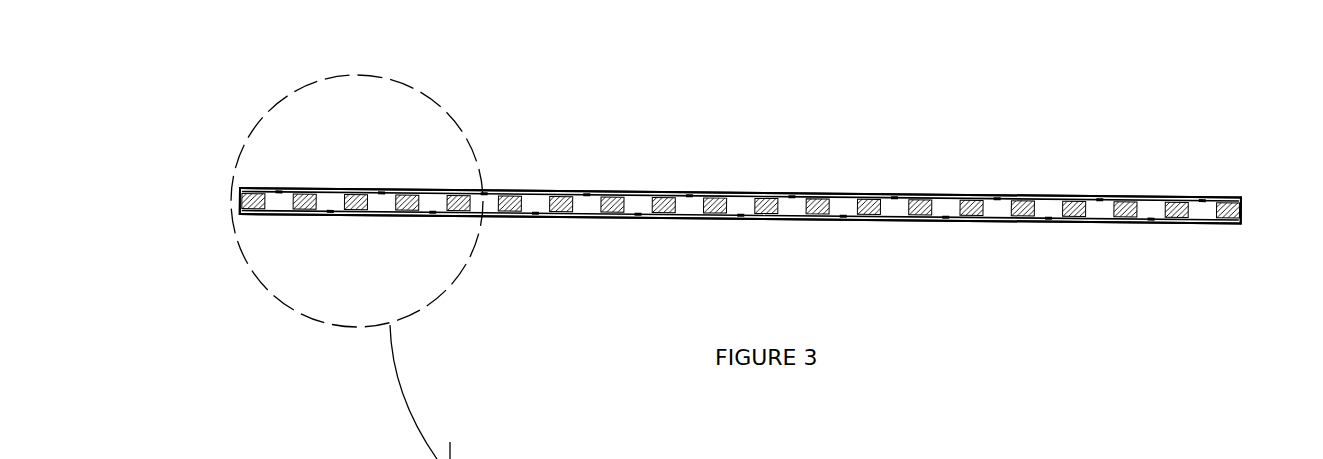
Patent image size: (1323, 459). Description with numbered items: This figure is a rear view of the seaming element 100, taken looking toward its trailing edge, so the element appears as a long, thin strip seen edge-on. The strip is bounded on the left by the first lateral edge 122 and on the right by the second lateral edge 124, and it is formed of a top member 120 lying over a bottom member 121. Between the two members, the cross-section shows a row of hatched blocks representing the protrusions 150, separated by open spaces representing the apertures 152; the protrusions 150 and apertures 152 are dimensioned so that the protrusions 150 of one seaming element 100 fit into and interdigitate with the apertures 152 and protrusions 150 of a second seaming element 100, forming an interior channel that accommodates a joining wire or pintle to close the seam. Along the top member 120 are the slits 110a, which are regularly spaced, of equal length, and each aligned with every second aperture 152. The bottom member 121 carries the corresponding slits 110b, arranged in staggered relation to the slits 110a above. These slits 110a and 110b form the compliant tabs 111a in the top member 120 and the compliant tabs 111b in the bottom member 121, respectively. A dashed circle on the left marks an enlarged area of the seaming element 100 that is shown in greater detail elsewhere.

The seaming element 100 is at (740, 122).
The slits 110a is at (687, 194).
The slits 110b is at (638, 218).
The compliant tabs 111a is at (937, 195).
The compliant tabs 111b is at (1005, 221).
The top member 120 is at (740, 153).
The bottom member 121 is at (740, 258).
The first lateral edge 122 is at (240, 200).
The second lateral edge 124 is at (1241, 212).
The protrusions 150 is at (766, 193).
The apertures 152 is at (792, 205).